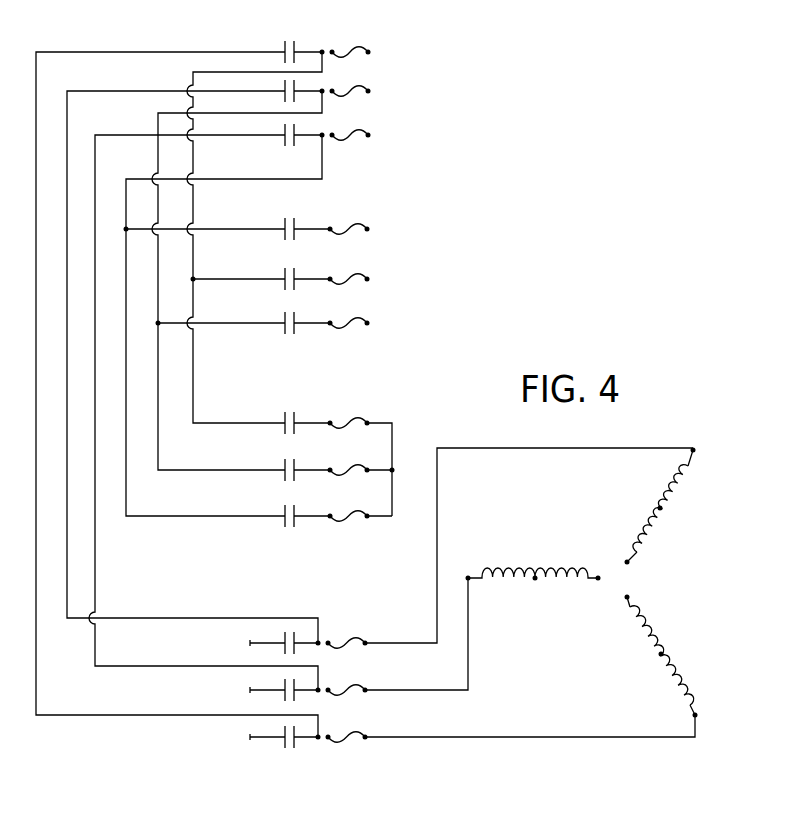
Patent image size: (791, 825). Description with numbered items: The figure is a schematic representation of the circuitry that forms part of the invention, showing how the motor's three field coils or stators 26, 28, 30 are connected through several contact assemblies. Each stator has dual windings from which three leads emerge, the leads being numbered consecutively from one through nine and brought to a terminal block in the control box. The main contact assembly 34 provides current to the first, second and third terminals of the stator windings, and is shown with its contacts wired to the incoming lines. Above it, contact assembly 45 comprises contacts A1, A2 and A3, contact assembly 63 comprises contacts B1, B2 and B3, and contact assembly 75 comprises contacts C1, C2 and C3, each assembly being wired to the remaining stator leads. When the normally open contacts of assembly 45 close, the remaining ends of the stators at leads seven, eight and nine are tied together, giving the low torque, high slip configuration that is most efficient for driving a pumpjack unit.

The contact assembly C1, C2, and C3 75 is at (352, 169).
The contact assembly B1, B2, and B3 63 is at (346, 352).
The contact assembly A1, A2, and A3 45 is at (340, 545).
The main contact assembly 34 is at (353, 767).
The field coil or stator 28 is at (542, 551).
The field coil or stator 30 is at (686, 526).
The field coil or stator 26 is at (638, 671).